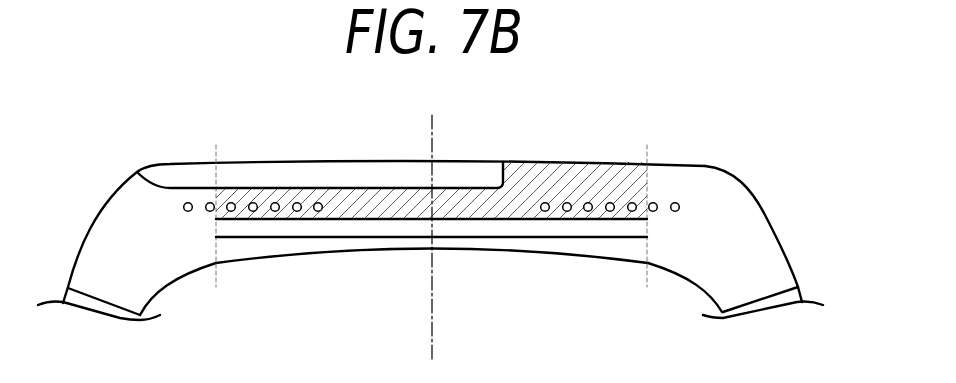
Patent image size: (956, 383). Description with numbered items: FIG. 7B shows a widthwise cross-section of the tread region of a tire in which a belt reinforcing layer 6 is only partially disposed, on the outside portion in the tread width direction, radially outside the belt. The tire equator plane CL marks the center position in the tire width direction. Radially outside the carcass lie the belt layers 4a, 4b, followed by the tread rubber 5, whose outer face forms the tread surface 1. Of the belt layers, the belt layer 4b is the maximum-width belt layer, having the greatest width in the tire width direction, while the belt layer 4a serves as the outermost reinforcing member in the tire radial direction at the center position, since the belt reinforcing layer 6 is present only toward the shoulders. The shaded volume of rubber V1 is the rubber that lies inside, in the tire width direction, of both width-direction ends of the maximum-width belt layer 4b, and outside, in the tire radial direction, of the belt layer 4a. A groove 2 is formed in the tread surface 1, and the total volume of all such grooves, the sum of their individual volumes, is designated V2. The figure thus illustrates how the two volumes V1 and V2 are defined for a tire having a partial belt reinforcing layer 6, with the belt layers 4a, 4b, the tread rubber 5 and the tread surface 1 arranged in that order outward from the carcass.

The tread surface 1 is at (595, 163).
The groove 2 is at (283, 170).
The belt layer 4a is at (508, 221).
The belt layer 4b is at (583, 238).
The tread rubber 5 is at (750, 233).
The belt reinforcing layer 6 is at (676, 202).
The volume of rubber V1 is at (540, 187).
The total groove volume V2 is at (333, 175).
The tire equator plane CL is at (428, 220).